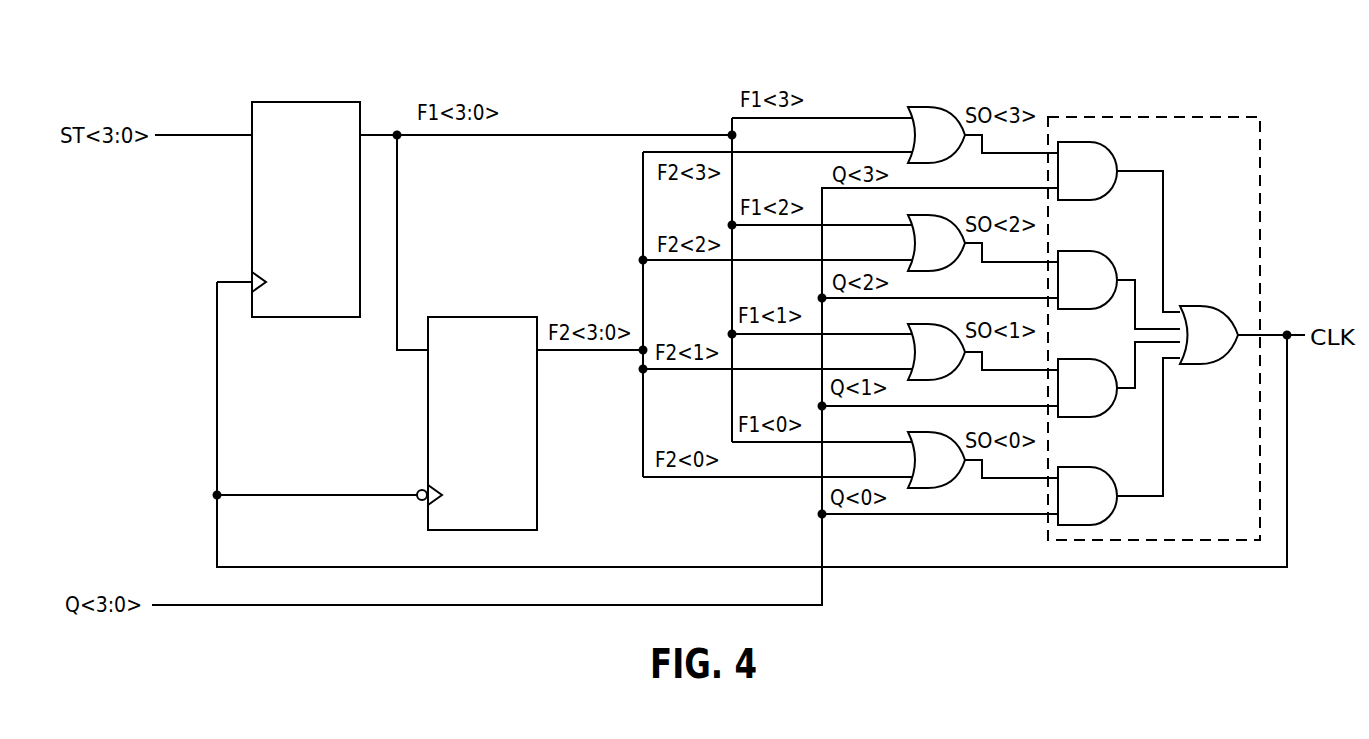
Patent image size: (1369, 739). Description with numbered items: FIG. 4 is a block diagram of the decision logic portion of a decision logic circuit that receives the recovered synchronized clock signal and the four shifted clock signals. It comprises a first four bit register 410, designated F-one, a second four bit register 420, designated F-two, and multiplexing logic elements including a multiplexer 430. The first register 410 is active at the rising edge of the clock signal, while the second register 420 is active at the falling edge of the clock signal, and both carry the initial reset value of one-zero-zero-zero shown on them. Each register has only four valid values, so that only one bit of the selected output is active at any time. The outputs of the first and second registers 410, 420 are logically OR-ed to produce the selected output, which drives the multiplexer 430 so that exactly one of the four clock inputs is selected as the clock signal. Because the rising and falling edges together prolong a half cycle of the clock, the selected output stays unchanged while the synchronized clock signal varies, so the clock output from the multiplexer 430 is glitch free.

The first four bit register 410 is at (296, 102).
The second four bit register 420 is at (476, 317).
The multiplexer 430 is at (1218, 117).